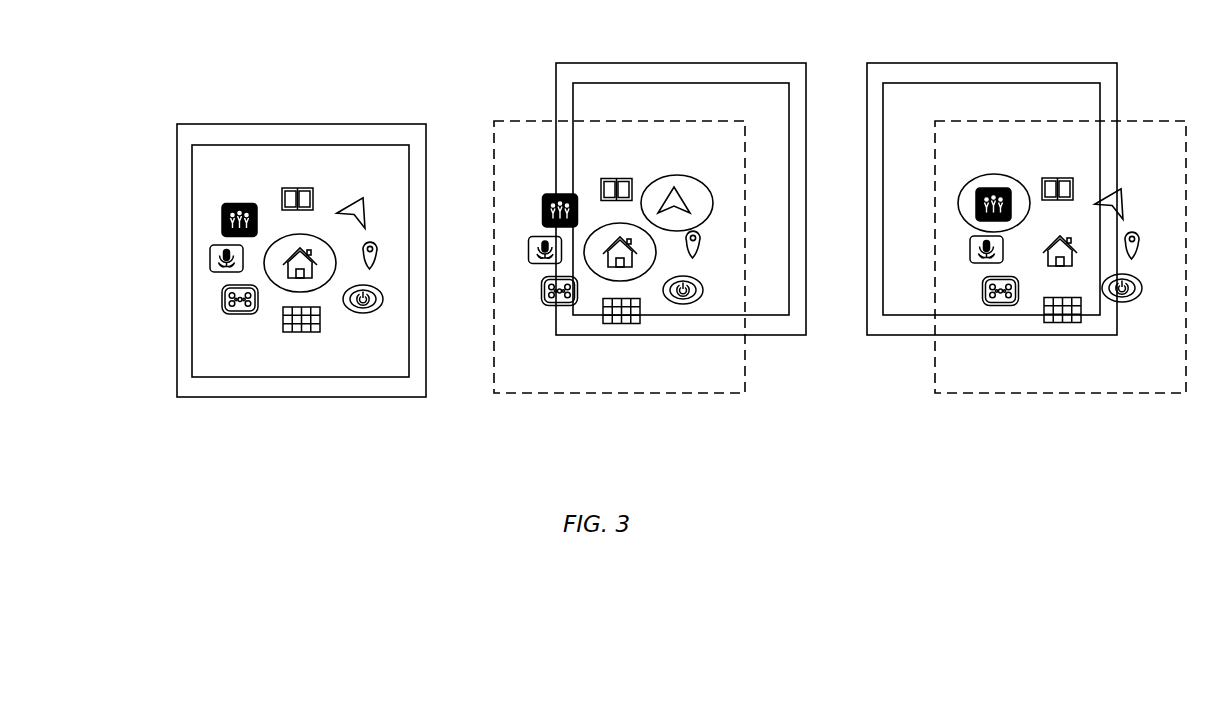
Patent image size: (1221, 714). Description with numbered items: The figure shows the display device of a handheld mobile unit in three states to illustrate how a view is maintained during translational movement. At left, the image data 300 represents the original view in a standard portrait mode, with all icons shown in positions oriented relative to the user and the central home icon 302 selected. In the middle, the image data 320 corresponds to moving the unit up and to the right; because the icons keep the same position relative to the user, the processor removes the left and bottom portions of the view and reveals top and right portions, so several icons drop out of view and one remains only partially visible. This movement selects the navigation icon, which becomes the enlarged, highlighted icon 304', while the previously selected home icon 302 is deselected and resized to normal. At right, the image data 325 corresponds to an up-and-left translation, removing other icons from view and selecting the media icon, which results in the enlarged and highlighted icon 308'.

The image data 300 is at (215, 378).
The home icon 302 is at (307, 220).
The selected icon 304' is at (687, 183).
The selected icon 308' is at (991, 186).
The image data 320 is at (778, 303).
The image data 325 is at (901, 92).